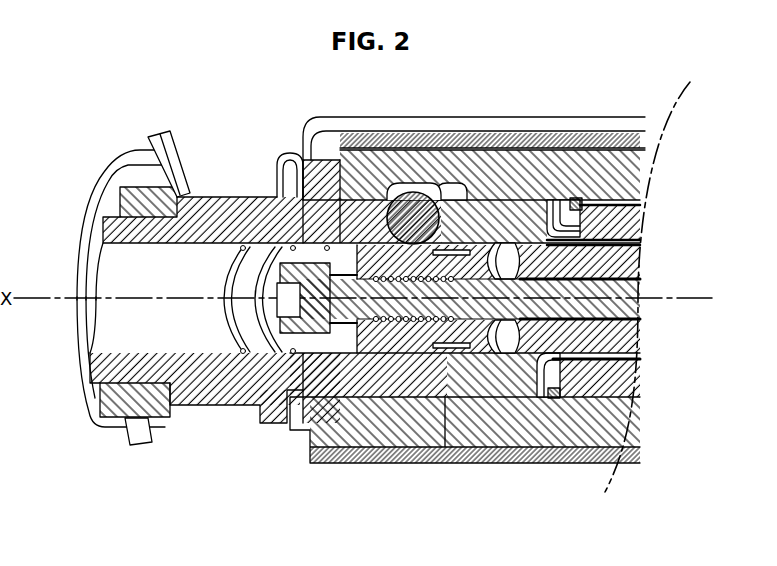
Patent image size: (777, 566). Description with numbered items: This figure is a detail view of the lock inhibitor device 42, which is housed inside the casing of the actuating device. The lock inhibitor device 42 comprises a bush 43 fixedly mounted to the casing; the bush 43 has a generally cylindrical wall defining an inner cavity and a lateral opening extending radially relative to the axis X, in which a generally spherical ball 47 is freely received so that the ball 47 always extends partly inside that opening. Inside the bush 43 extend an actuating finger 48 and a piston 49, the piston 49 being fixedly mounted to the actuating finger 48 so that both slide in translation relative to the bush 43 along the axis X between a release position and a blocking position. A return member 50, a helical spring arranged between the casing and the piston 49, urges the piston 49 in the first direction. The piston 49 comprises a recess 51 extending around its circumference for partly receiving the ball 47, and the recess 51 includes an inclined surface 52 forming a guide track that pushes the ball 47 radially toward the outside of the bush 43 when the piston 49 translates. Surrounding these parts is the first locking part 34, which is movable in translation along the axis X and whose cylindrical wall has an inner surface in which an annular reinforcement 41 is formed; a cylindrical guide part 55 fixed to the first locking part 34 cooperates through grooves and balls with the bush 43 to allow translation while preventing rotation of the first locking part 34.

The lock inhibitor device 42 is at (248, 96).
The bush 43 is at (233, 215).
The ball 47 is at (413, 220).
The inclined surface 52 is at (437, 245).
The first locking part 34 is at (586, 172).
The guide part 55 is at (603, 222).
The actuating finger 48 is at (620, 303).
The return member 50 is at (225, 323).
The piston 49 is at (373, 337).
The recess 51 is at (410, 405).
The annular reinforcement 41 is at (423, 347).